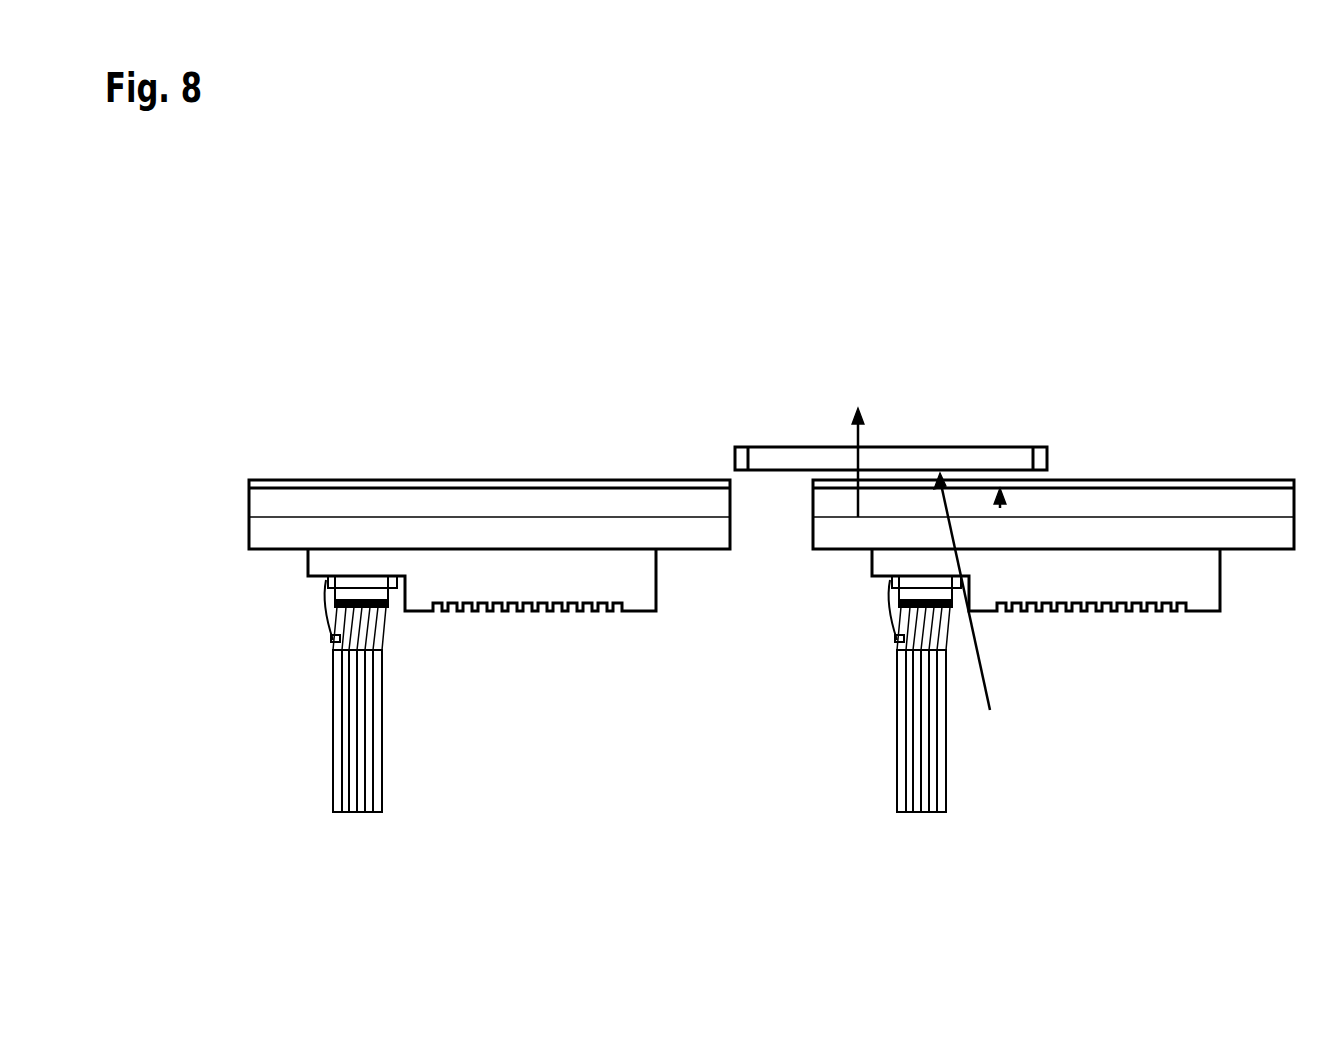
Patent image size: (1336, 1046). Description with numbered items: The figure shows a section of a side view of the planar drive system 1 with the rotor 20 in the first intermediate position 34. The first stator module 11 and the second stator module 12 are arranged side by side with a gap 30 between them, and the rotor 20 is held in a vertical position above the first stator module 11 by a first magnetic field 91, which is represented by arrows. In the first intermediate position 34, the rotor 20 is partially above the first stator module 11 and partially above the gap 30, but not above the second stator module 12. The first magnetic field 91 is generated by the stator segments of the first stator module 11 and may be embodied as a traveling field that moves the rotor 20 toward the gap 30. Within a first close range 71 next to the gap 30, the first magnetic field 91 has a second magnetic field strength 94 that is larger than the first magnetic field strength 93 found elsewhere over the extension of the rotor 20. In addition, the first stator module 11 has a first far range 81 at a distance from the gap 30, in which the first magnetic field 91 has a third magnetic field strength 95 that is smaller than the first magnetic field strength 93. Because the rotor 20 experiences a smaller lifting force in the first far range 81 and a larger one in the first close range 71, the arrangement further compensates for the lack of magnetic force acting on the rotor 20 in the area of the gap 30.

The planar drive system 1 is at (1193, 238).
The first stator module 11 is at (1073, 592).
The second stator module 12 is at (509, 592).
The rotor 20 is at (1013, 447).
The gap 30 is at (777, 595).
The first intermediate position 34 is at (903, 272).
The first close range 71 is at (810, 360).
The first far range 81 is at (973, 360).
The first magnetic field 91 is at (952, 599).
The first magnetic field strength 93 is at (990, 710).
The second magnetic field strength 94 is at (858, 437).
The third magnetic field strength 95 is at (1002, 508).